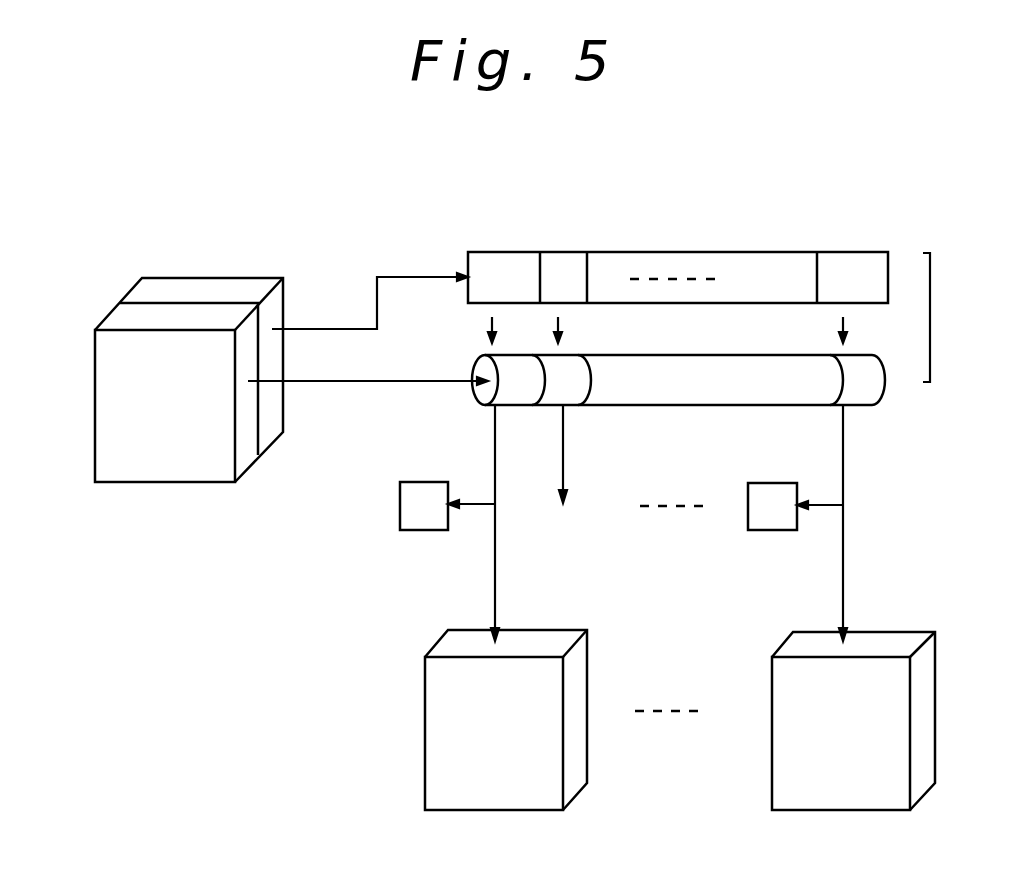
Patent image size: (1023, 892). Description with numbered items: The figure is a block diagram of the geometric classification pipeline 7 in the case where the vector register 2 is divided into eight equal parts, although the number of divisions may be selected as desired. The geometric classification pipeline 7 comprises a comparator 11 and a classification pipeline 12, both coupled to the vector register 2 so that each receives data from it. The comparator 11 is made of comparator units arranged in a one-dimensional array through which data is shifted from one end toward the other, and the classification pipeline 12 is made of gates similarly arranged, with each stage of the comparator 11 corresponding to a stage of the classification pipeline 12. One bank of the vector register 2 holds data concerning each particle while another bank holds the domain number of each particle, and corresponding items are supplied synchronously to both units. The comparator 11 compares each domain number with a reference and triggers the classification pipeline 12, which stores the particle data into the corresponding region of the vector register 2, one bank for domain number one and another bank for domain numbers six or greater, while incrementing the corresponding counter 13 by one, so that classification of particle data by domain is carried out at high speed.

The vector register 2 is at (137, 484).
The geometric classification pipeline 7 is at (724, 424).
The comparator 11 is at (683, 251).
The classification pipeline 12 is at (707, 357).
The counter 13 is at (400, 512).